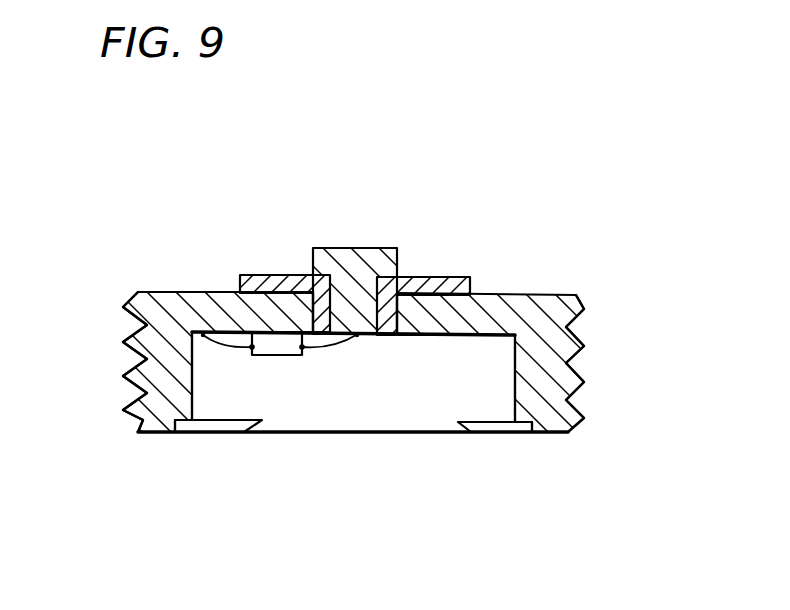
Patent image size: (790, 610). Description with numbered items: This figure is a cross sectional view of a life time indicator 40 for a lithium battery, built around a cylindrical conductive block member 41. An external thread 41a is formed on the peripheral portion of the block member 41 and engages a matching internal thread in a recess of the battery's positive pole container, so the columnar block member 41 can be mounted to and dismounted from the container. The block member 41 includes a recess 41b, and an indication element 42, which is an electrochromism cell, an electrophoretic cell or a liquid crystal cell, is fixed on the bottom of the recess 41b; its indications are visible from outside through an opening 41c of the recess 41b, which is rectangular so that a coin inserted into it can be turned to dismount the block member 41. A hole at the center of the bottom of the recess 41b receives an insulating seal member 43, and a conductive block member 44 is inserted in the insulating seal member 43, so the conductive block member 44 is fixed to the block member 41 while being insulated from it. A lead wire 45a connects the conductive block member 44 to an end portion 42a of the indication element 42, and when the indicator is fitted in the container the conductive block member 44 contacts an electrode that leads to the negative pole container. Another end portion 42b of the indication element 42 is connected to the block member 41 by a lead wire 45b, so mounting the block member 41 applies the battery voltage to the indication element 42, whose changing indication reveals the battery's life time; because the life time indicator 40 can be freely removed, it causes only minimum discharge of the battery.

The life time indicator 40 is at (635, 223).
The conductive block member 41 is at (158, 293).
The external thread 41a is at (135, 418).
The recess 41b is at (513, 400).
The opening 41c is at (335, 444).
The indication element 42 is at (282, 356).
The end portion of the indication element 42a is at (306, 349).
The another end portion of the indication element 42b is at (252, 355).
The insulating seal member 43 is at (265, 278).
The conductive block member 44 is at (350, 248).
The lead wire 45a is at (337, 345).
The lead wire 45b is at (211, 343).